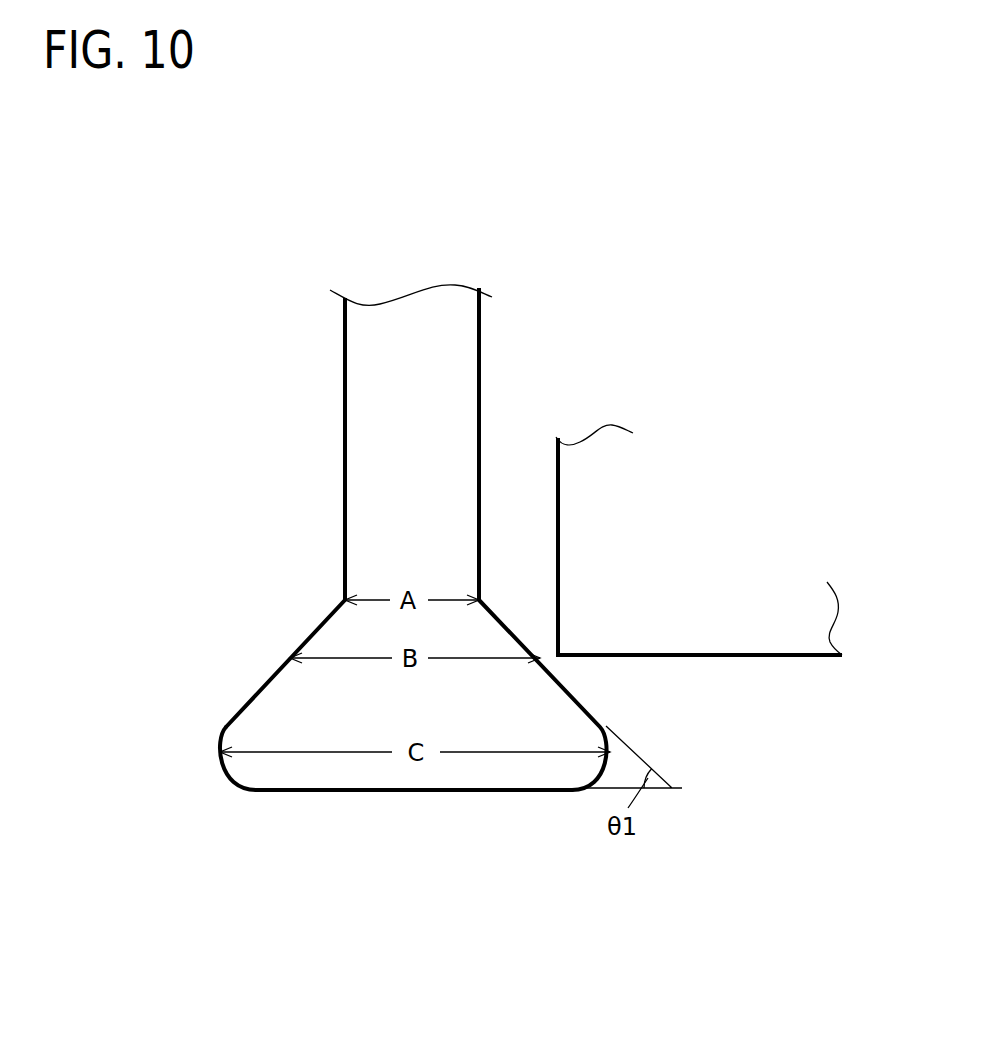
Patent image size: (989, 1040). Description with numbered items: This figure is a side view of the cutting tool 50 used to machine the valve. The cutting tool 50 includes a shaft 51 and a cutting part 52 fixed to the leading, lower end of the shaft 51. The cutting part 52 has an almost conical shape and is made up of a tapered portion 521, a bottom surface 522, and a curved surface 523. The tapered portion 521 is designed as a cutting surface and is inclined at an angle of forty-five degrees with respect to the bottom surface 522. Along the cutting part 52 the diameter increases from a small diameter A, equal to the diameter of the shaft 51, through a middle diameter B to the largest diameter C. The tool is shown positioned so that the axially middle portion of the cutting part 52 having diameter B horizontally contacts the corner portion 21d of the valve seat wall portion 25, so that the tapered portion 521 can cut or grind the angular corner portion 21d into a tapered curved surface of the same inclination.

The cutting tool 50 is at (207, 393).
The shaft 51 is at (362, 432).
The cutting part 52 is at (326, 641).
The tapered portion 521 is at (265, 680).
The bottom surface 522 is at (424, 792).
The curved surface 523 is at (223, 768).
The corner portion 21d is at (558, 655).
The valve seat wall portion 25 is at (580, 632).